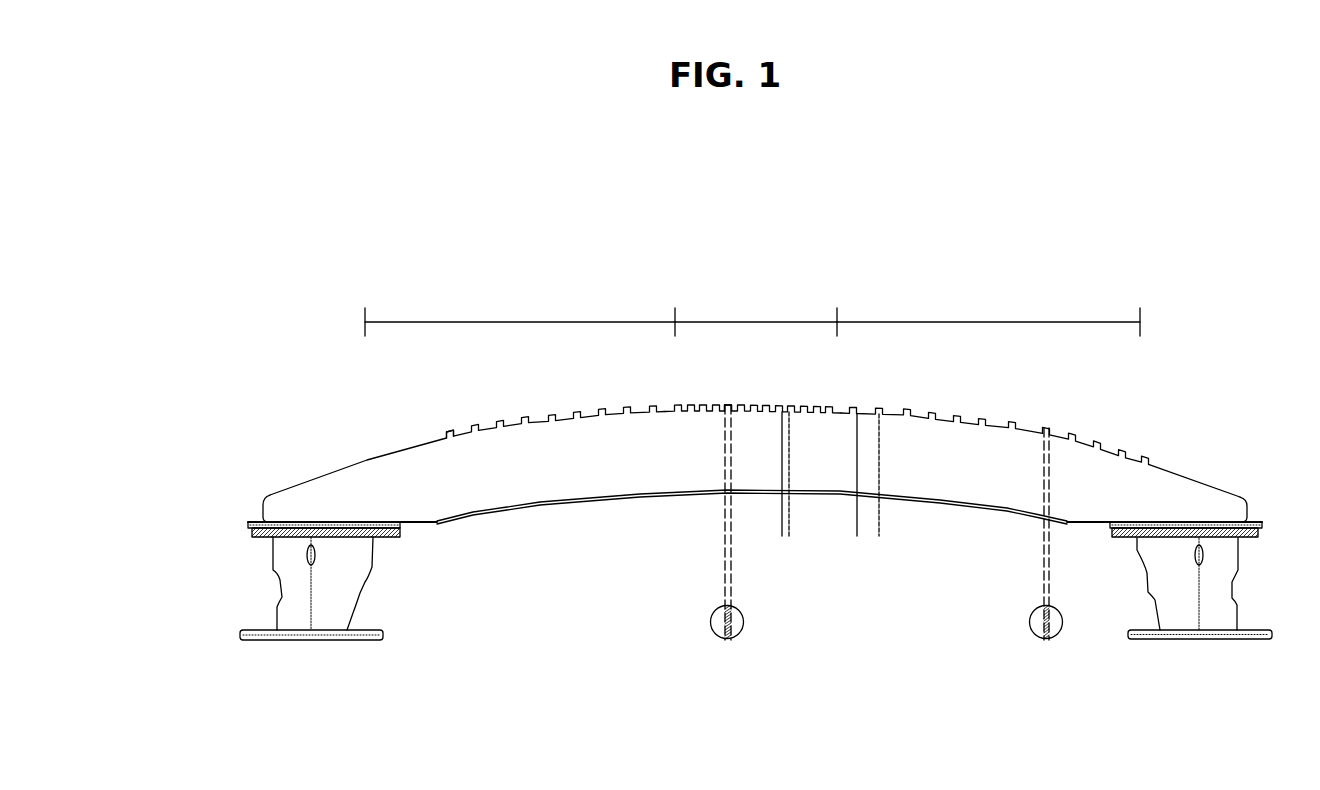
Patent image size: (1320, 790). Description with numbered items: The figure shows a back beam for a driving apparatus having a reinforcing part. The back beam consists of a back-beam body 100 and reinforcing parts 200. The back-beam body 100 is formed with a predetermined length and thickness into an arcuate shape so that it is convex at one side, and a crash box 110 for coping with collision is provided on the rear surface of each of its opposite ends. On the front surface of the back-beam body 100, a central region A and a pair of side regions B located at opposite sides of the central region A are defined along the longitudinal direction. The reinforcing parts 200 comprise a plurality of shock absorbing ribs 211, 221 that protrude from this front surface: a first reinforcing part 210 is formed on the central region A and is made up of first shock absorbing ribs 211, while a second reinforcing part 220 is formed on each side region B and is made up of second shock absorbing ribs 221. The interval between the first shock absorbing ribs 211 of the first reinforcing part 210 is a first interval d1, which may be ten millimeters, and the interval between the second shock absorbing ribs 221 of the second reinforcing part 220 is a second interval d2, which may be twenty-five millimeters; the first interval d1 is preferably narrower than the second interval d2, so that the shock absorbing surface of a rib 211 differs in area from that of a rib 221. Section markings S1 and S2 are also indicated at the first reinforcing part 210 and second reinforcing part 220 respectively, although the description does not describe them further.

The back-beam body 100 is at (755, 367).
The crash box 110 is at (345, 576).
The reinforcing parts 200 is at (755, 329).
The first reinforcing part 210 is at (753, 325).
The first shock absorbing rib 211 is at (727, 406).
The second reinforcing part 220 is at (755, 370).
The second shock absorbing rib 221 is at (448, 433).
The first section S1 is at (744, 622).
The second section S2 is at (1063, 622).
The first interval d1 is at (819, 529).
The second interval d2 is at (827, 529).
The central region A is at (756, 311).
The side regions B is at (752, 311).